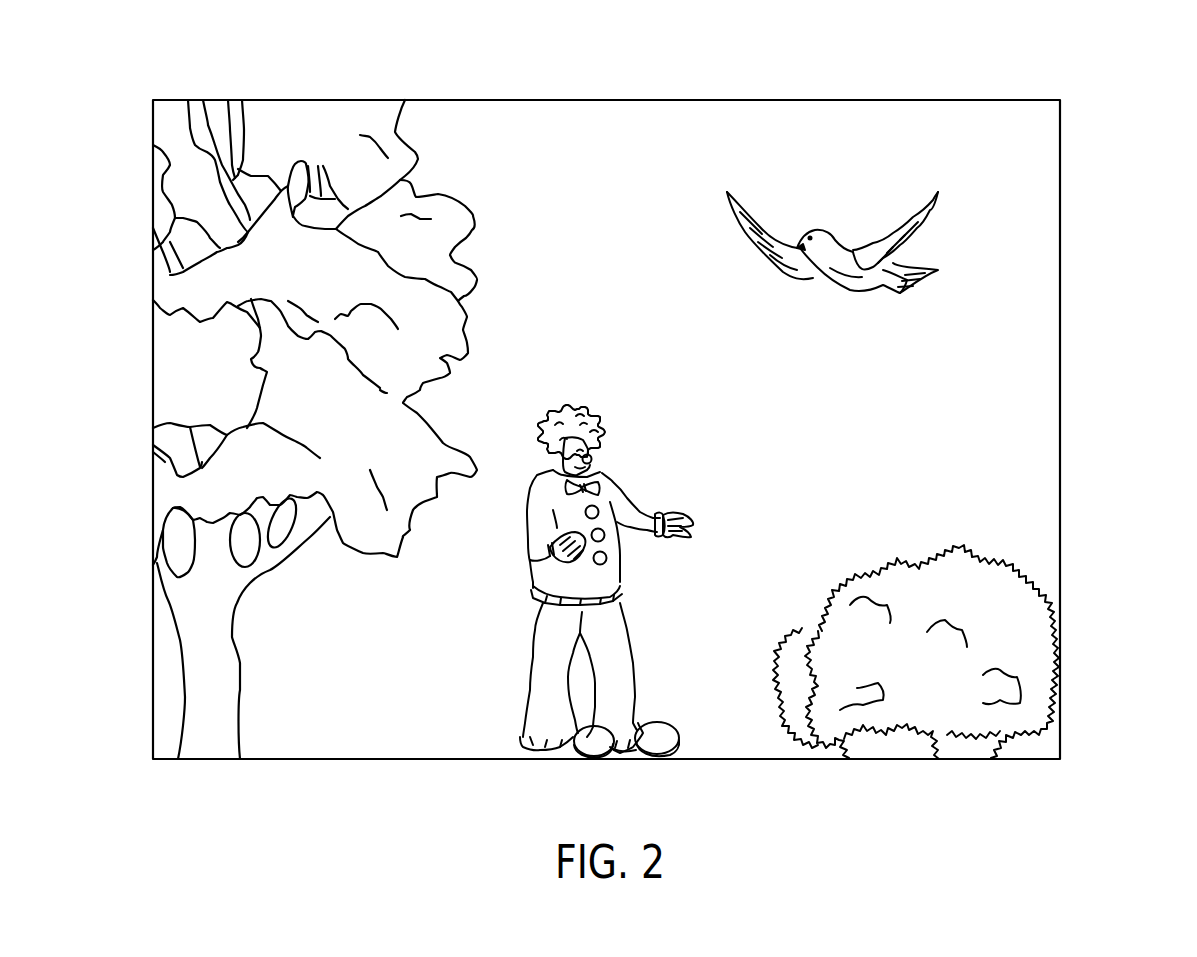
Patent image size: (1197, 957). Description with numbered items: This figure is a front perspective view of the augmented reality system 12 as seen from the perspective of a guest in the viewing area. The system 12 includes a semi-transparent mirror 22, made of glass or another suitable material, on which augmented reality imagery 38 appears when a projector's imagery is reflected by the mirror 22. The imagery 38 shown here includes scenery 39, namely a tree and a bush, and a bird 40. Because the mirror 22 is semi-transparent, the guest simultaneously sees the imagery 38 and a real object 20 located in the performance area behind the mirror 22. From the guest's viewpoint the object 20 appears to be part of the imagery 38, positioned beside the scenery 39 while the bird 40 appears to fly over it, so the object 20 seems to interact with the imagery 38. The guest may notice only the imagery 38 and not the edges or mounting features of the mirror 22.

The augmented reality system 12 is at (1066, 78).
The object 20 is at (620, 552).
The semi-transparent mirror 22 is at (1060, 226).
The augmented reality imagery 38 is at (659, 208).
The scenery 39 is at (453, 170).
The bird 40 is at (870, 305).